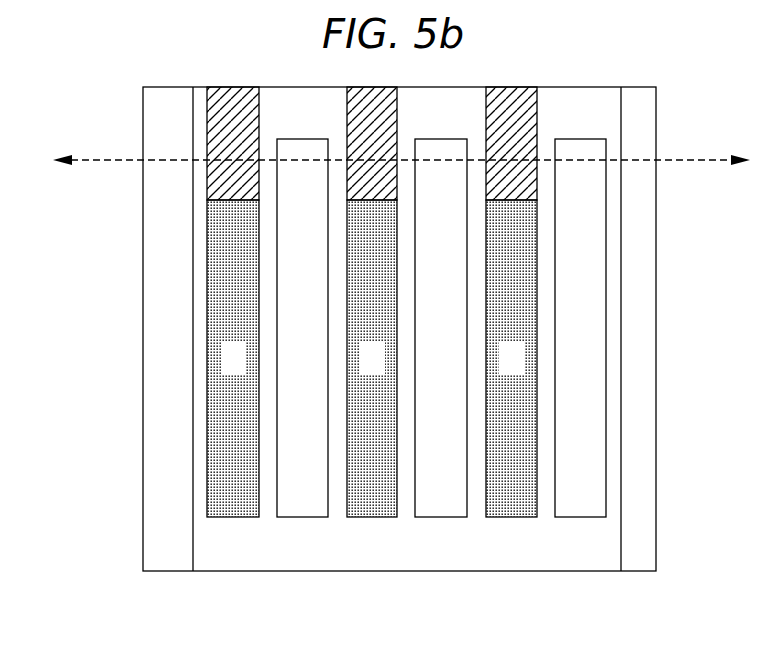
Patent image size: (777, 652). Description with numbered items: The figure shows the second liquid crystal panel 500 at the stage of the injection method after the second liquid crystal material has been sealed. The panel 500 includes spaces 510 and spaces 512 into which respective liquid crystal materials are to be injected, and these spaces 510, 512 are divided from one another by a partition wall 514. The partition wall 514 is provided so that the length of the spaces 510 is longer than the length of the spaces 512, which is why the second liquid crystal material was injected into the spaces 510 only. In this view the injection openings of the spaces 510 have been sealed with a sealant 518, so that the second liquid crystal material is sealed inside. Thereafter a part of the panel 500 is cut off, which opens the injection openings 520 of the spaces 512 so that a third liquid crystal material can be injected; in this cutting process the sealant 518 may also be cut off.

The second liquid crystal panel 500 is at (118, 384).
The spaces 510 is at (230, 303).
The spaces 512 is at (299, 485).
The partition wall 514 is at (225, 546).
The sealant 518 is at (231, 105).
The injection openings 520 is at (580, 187).